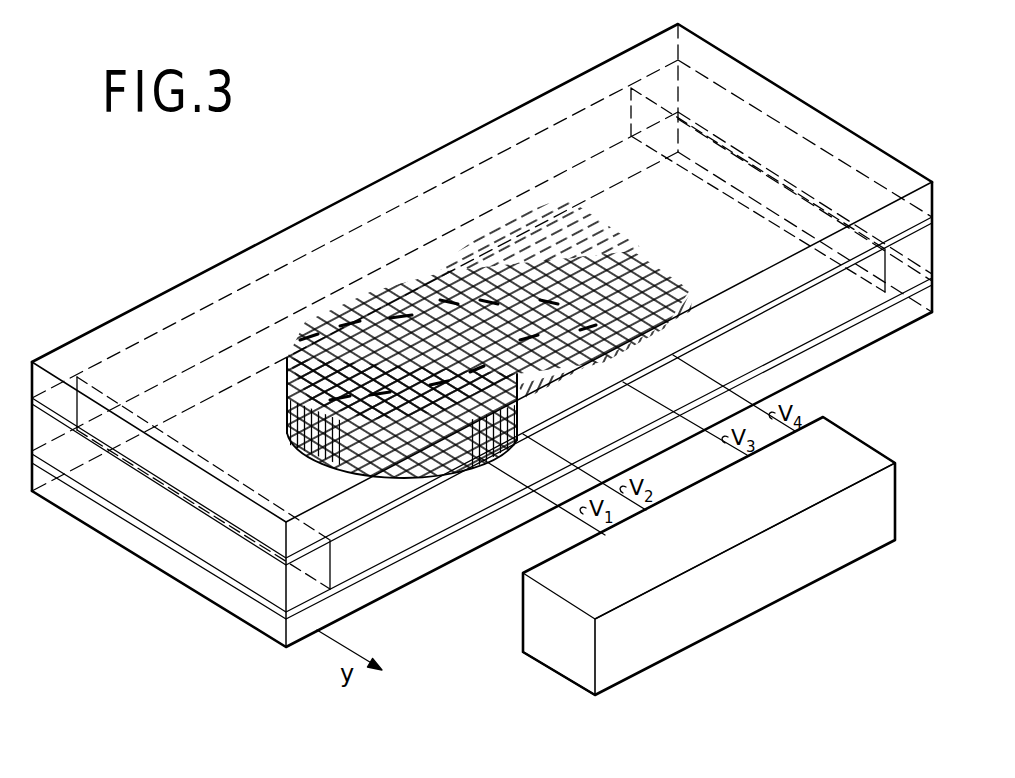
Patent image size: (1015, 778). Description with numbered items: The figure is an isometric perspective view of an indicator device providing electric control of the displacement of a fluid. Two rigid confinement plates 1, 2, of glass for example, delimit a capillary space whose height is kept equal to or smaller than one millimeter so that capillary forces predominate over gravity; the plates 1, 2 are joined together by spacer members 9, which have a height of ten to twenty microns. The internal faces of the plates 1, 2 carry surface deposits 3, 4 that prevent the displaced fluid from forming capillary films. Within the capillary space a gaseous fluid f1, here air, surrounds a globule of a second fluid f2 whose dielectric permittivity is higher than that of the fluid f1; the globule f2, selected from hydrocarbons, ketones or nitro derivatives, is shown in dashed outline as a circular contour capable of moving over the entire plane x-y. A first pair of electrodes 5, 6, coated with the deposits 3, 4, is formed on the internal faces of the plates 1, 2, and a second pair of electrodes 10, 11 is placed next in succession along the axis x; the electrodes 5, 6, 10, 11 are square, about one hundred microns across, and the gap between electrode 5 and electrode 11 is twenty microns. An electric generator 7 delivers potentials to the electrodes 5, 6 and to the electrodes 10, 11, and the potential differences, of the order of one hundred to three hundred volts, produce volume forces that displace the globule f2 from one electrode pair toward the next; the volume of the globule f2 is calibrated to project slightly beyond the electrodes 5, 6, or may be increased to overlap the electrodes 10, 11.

The confinement plate 1 is at (862, 154).
The confinement plate 2 is at (882, 322).
The surface deposit 3 is at (797, 292).
The surface deposit 4 is at (862, 313).
The electrode 5 is at (277, 348).
The electrode 6 is at (276, 390).
The electric generator 7 is at (873, 447).
The spacer members 9 is at (920, 248).
The electrode 10 is at (677, 328).
The electrode 11 is at (620, 243).
The first fluid f1 is at (392, 545).
The second fluid globule f2 is at (302, 440).